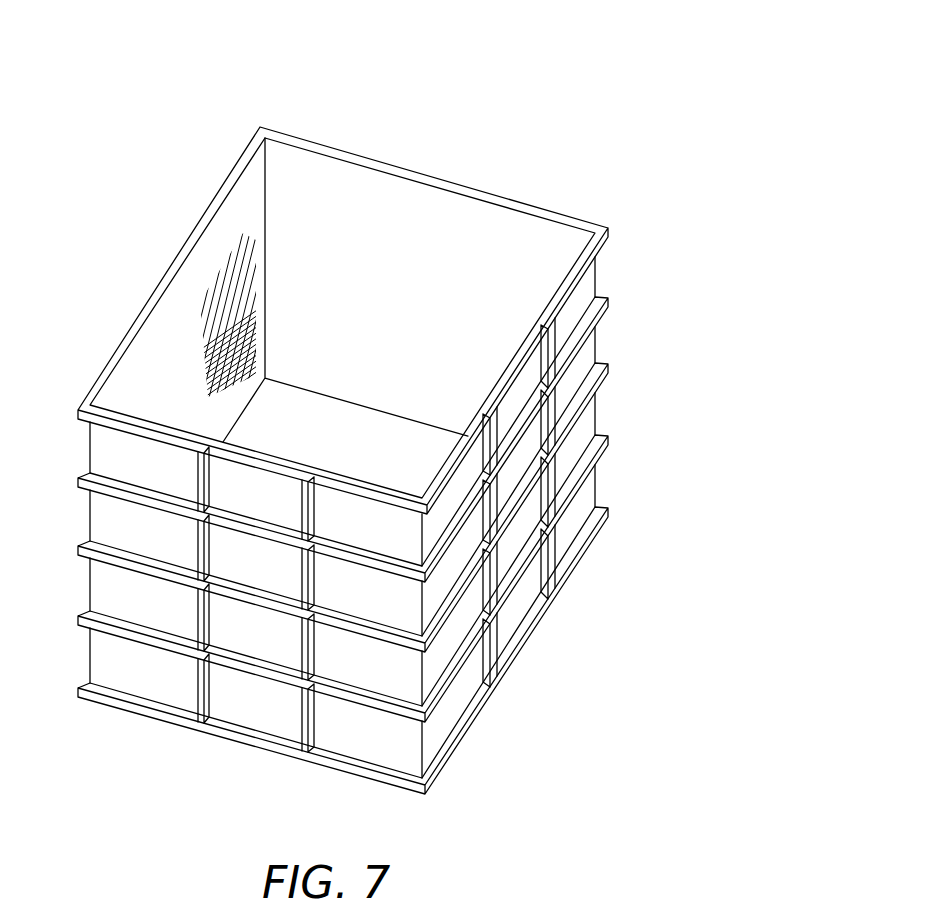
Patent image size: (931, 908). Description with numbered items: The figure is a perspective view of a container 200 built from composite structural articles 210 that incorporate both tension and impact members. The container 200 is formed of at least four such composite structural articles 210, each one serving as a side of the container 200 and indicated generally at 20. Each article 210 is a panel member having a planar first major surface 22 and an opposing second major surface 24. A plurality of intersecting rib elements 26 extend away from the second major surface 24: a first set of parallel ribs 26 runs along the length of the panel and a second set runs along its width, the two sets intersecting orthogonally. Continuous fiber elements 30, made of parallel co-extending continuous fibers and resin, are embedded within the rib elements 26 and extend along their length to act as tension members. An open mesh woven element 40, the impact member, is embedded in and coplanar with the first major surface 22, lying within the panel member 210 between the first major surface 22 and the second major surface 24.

The container 200 is at (475, 78).
The container body 20 is at (102, 373).
The composite structural article 210 is at (153, 288).
The first major surface 22 is at (365, 197).
The open mesh woven element 40 is at (233, 307).
The continuous fiber element 30 is at (605, 438).
The rib element 26 is at (87, 476).
The second major surface 24 is at (610, 512).